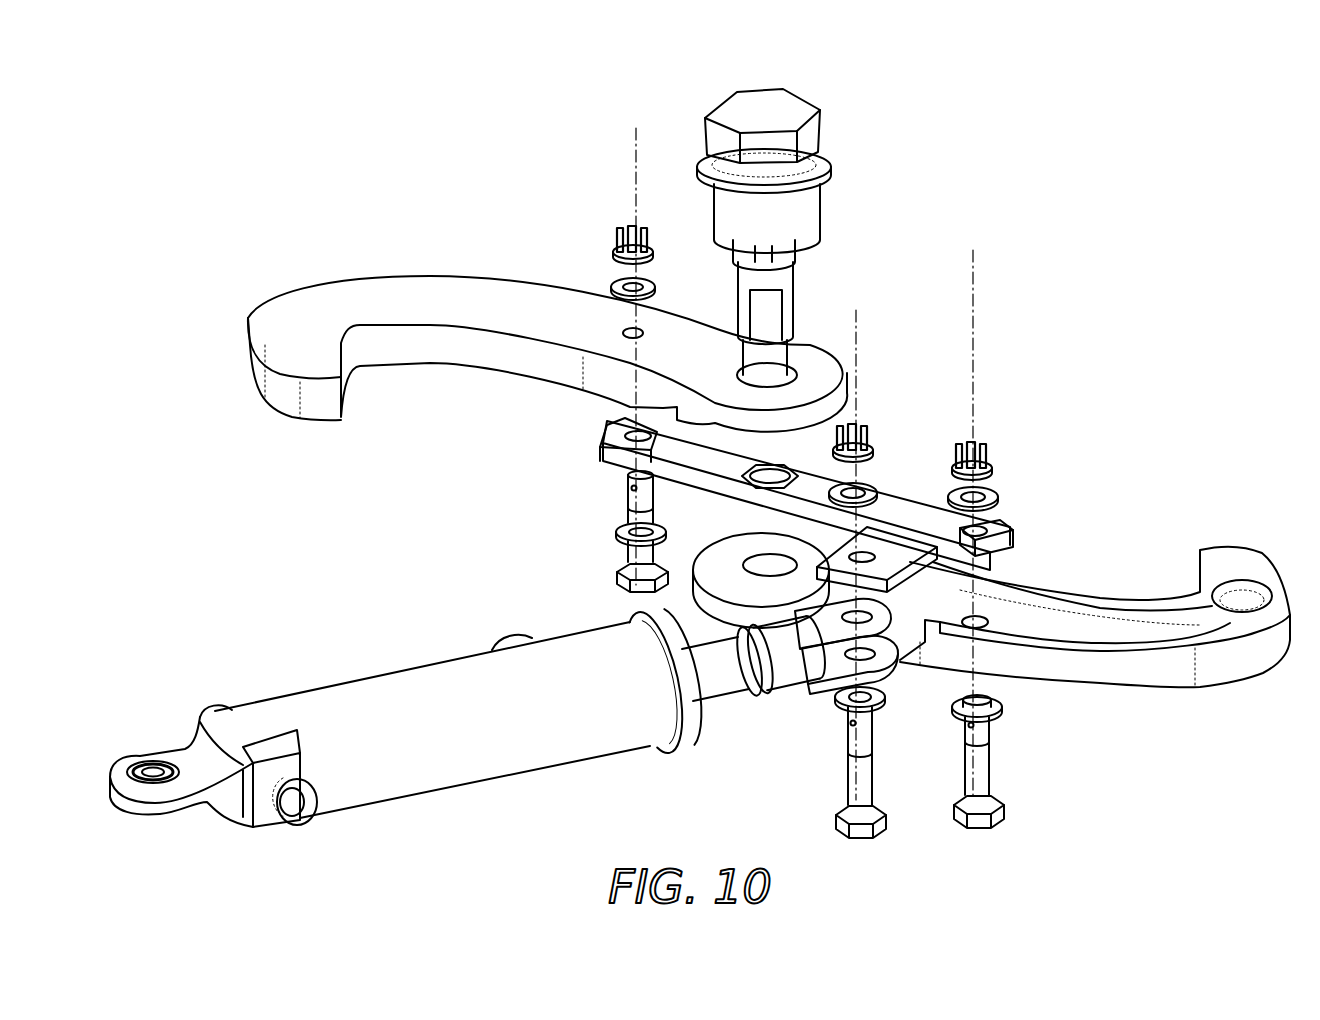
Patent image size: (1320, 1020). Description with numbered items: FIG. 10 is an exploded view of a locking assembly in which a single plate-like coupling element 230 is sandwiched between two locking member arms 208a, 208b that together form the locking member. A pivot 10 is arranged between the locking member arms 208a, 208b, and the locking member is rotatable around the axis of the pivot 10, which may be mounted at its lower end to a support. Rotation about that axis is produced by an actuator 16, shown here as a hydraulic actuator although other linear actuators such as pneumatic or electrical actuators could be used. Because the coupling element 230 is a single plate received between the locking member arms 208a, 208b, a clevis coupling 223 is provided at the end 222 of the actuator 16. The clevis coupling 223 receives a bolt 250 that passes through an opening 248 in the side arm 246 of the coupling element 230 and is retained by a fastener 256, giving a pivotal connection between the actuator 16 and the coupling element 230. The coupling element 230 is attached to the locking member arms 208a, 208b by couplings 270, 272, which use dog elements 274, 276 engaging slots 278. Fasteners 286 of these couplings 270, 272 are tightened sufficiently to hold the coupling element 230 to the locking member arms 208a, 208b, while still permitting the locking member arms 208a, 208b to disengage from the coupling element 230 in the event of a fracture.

The pivot 10 is at (765, 98).
The actuator 16 is at (512, 775).
The locking member arm 208a is at (381, 280).
The locking member arm 208b is at (1157, 677).
The end of the actuator 222 is at (783, 688).
The clevis coupling 223 is at (823, 684).
The coupling element 230 is at (920, 505).
The side arm 246 is at (885, 537).
The opening 248 is at (873, 565).
The bolt 250 is at (875, 824).
The fastener 256 is at (866, 420).
The coupling 270 is at (627, 507).
The coupling 272 is at (993, 775).
The dog element 274 is at (620, 540).
The dog element 276 is at (992, 738).
The slot 278 is at (605, 437).
The fastener 286 is at (612, 240).